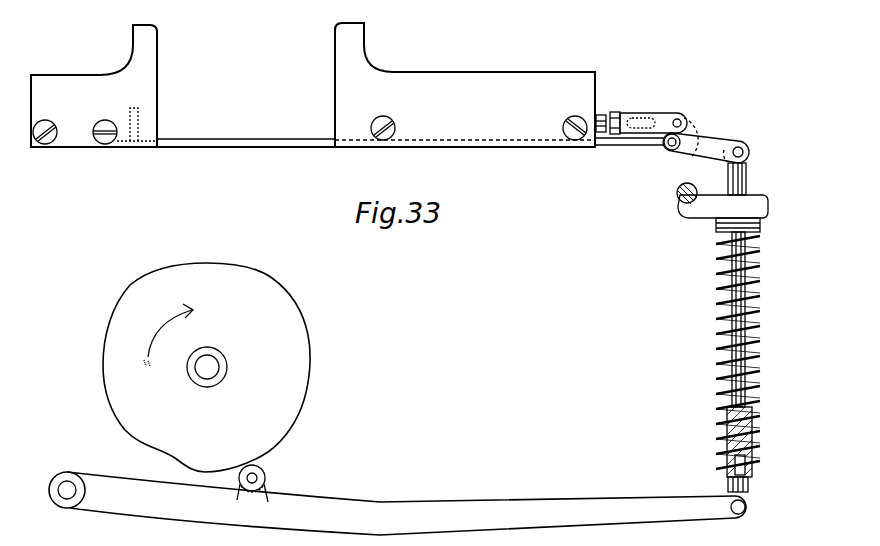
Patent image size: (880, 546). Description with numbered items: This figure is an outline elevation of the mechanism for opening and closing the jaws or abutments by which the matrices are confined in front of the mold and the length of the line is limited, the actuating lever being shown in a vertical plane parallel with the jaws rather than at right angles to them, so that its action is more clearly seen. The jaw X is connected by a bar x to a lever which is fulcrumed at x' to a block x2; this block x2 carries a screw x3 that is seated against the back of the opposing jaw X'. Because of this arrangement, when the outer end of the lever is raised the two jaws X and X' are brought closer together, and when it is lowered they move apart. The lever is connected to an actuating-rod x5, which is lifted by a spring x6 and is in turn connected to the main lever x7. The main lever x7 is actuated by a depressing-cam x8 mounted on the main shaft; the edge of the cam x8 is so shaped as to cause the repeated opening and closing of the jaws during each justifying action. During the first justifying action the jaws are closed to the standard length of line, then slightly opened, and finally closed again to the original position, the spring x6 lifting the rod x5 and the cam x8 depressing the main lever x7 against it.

The jaw X is at (94, 86).
The jaw X' is at (465, 85).
The bar x is at (442, 146).
The fulcrum x' is at (706, 130).
The block x2 is at (640, 112).
The screw x3 is at (605, 115).
The actuating-rod x5 is at (748, 181).
The spring x6 is at (760, 328).
The main lever x7 is at (540, 501).
The depressing-cam x8 is at (206, 367).